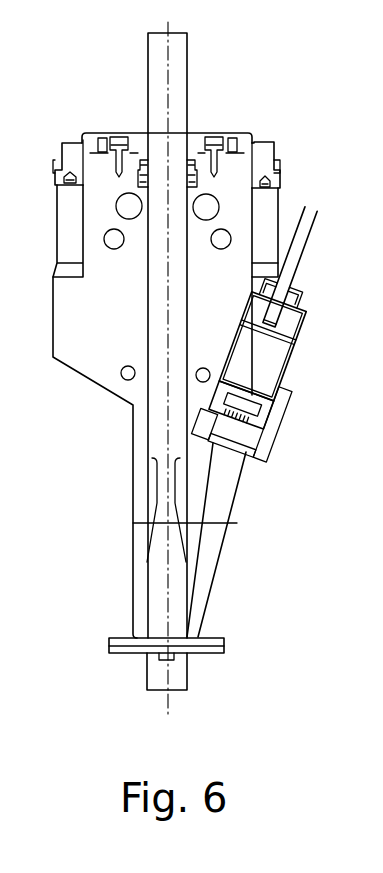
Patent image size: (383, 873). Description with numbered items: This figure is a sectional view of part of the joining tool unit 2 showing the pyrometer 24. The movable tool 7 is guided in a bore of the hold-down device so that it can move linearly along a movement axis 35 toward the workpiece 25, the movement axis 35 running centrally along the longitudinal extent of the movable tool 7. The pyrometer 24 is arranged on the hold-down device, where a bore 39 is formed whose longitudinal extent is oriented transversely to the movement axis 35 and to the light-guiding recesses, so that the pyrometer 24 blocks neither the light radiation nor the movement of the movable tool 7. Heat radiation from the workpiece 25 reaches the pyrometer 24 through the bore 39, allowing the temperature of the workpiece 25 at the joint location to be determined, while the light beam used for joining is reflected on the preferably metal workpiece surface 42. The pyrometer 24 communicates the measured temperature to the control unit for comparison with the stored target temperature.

The fuel injector assembly 2 is at (292, 160).
The movable tool 7 is at (187, 80).
The pyrometer 24 is at (270, 363).
The workpiece 25 is at (228, 634).
The movement axis 35 is at (168, 102).
The bore 39 is at (218, 482).
The workpiece surface 42 is at (117, 634).